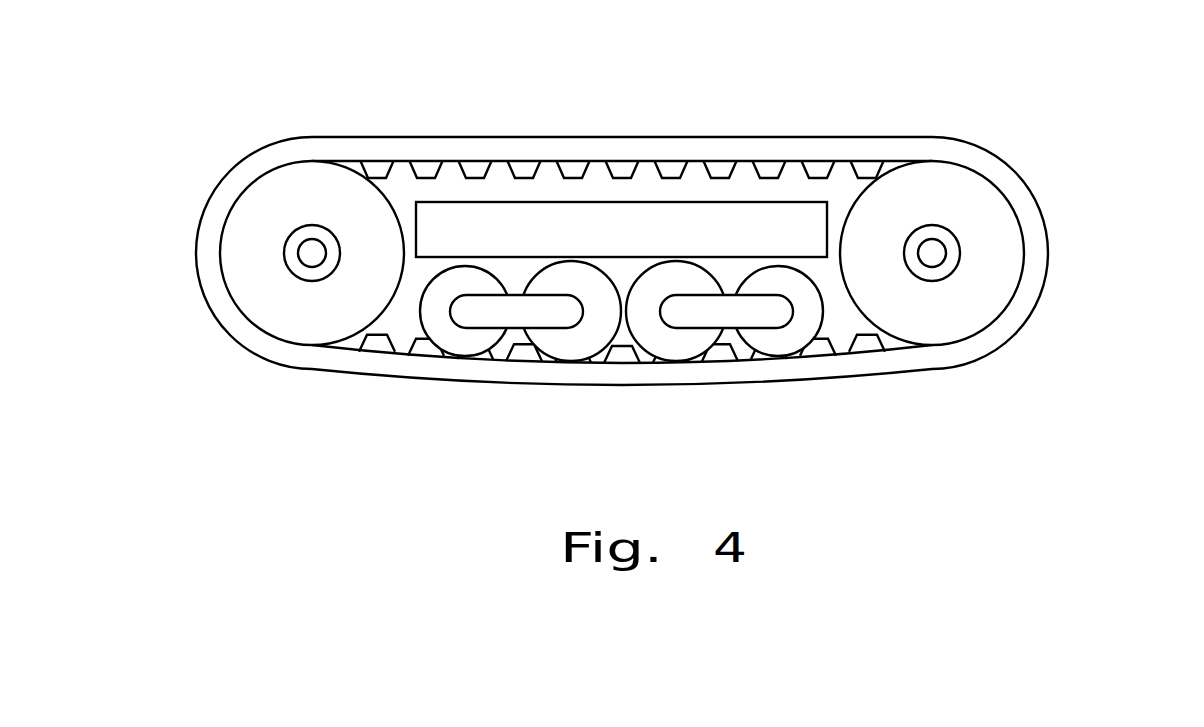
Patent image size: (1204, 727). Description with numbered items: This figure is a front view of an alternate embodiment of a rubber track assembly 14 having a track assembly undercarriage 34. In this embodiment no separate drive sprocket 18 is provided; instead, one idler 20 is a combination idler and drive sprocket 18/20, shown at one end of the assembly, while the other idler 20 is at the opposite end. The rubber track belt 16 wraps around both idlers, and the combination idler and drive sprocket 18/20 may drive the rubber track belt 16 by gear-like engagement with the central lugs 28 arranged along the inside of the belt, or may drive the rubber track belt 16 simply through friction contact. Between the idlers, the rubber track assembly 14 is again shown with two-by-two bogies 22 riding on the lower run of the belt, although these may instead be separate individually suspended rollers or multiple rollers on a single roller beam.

The rubber track assembly 14 is at (1045, 125).
The rubber track belt 16 is at (653, 138).
The drive sprocket 18 is at (987, 305).
The idler 20 is at (275, 320).
The bogies 22 is at (570, 347).
The central lugs 28 is at (767, 168).
The track assembly undercarriage 34 is at (568, 223).